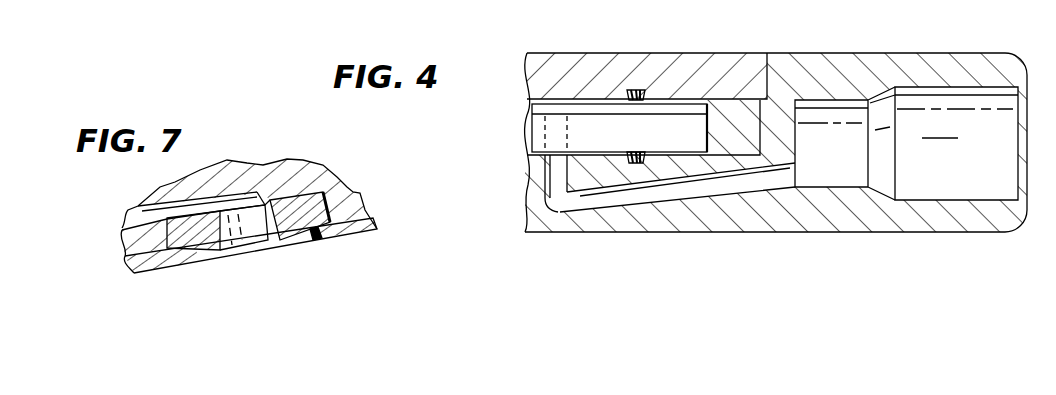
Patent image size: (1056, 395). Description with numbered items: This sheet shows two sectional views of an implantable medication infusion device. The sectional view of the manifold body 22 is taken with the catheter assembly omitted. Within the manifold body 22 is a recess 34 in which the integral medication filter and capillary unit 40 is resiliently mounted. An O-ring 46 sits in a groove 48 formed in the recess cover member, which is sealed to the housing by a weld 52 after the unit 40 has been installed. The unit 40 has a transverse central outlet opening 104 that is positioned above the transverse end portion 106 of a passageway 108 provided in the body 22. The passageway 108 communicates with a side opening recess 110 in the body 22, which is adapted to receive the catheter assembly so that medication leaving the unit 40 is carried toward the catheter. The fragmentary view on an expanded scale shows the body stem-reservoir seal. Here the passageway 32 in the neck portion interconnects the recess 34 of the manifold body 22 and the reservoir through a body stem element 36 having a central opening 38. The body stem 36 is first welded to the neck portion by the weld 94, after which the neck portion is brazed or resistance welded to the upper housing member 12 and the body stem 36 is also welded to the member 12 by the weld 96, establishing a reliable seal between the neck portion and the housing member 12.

In FIG. 7, the upper housing member 12 is at (362, 230).
In FIG. 4, the manifold body 22 is at (776, 233).
In FIG. 7, the passageway 32 is at (170, 198).
In FIG. 4, the recess 34 is at (742, 110).
In FIG. 7, the body stem element 36 is at (290, 207).
In FIG. 7, the central opening 38 is at (258, 223).
In FIG. 4, the integral medication filter and capillary unit 40 is at (708, 134).
In FIG. 4, the O-ring 46 is at (637, 90).
In FIG. 4, the groove 48 is at (630, 90).
In FIG. 4, the weld 52 is at (728, 65).
In FIG. 7, the weld 94 is at (353, 192).
In FIG. 7, the weld 96 is at (320, 237).
In FIG. 4, the central outlet opening 104 is at (545, 128).
In FIG. 4, the transverse end portion 106 is at (557, 173).
In FIG. 4, the passageway 108 is at (680, 190).
In FIG. 4, the side opening recess 110 is at (948, 101).